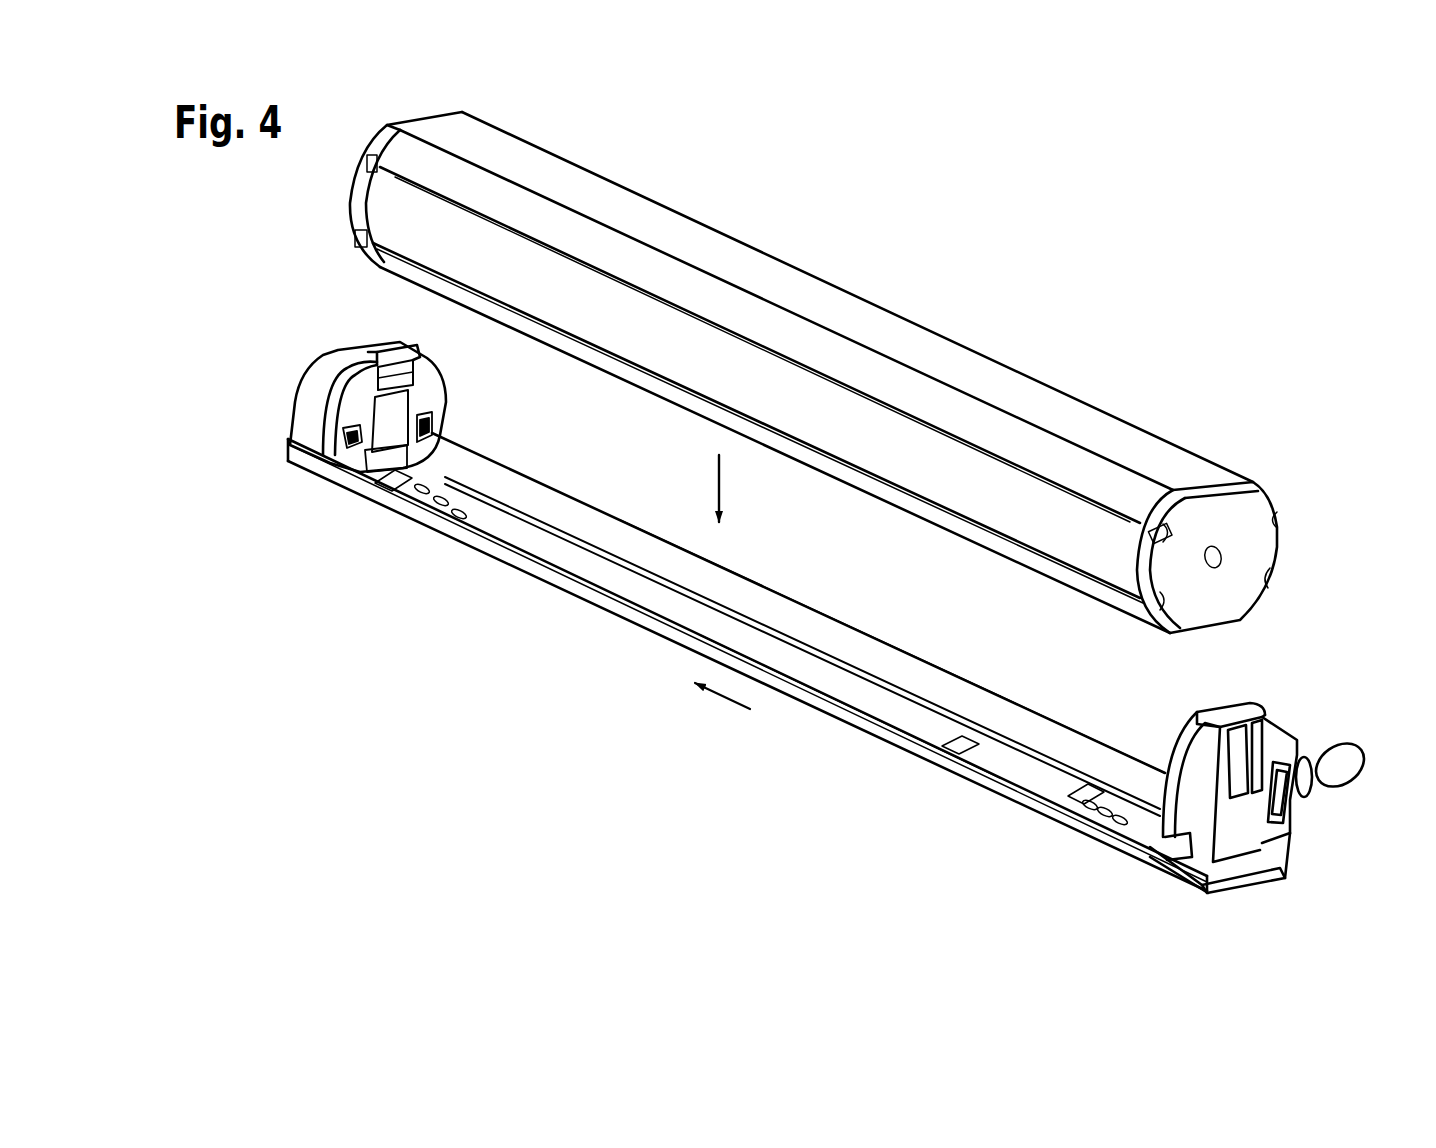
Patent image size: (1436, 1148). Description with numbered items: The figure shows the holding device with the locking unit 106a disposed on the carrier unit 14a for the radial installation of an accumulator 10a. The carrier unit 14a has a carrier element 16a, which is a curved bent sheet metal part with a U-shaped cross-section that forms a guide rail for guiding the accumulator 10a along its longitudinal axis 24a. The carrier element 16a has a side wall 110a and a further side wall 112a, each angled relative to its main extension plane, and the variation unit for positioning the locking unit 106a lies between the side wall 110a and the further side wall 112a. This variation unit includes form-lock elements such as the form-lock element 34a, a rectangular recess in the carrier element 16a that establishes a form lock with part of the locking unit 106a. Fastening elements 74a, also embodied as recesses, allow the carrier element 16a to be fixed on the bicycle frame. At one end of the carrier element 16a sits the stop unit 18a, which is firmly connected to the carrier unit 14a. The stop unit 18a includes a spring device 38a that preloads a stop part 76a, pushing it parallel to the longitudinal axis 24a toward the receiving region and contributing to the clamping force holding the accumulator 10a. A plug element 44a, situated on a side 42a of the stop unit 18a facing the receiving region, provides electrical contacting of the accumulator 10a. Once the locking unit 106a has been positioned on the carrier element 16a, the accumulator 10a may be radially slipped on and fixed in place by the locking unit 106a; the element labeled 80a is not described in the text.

The accumulator 10a is at (900, 335).
The carrier unit 14a is at (544, 610).
The carrier element 16a is at (663, 603).
The stop unit 18a is at (356, 420).
The longitudinal axis 24a is at (727, 700).
The form-lock element 34a is at (1088, 797).
The spring device 38a is at (282, 413).
The side 42a is at (422, 392).
The plug element 44a is at (385, 440).
The fastening element 74a is at (1090, 823).
The stop part 76a is at (425, 372).
The locking lugs 80a is at (352, 457).
The locking unit 106a is at (1288, 705).
The side wall 110a is at (885, 663).
The further side wall 112a is at (848, 719).